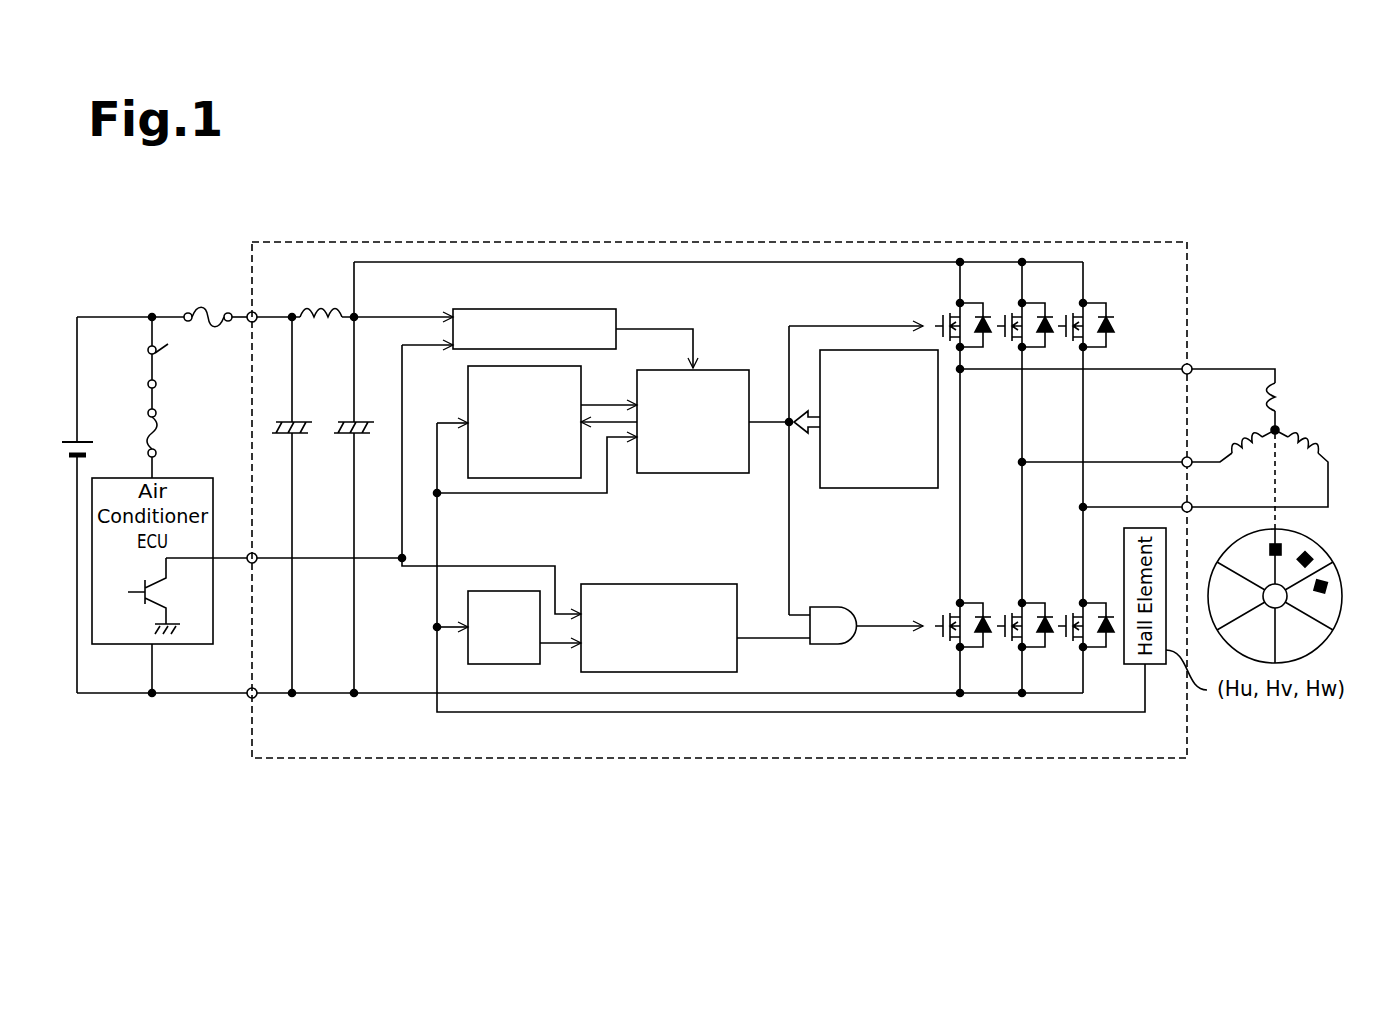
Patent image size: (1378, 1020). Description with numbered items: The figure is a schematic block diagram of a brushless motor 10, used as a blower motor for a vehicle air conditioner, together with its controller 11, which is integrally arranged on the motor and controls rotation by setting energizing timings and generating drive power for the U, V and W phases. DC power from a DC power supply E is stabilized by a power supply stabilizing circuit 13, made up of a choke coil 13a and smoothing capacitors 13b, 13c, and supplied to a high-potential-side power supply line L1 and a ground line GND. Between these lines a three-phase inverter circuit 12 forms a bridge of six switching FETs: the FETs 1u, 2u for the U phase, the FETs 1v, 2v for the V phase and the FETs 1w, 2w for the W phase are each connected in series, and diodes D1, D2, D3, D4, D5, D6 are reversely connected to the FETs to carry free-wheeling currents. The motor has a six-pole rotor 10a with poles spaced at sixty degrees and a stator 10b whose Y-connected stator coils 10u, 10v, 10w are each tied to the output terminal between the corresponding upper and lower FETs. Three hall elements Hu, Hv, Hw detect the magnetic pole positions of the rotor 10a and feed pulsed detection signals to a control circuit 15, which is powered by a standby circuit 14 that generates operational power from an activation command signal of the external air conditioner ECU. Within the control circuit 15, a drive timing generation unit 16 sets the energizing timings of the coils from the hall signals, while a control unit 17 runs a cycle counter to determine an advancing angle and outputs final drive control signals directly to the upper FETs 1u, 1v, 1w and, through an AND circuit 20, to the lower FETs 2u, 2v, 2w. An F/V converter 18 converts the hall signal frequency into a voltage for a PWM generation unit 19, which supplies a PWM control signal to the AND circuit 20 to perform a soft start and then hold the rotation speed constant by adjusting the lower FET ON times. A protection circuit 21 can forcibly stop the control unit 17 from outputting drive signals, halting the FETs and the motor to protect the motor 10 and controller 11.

The brushless motor 10 is at (1262, 213).
The rotor 10a is at (1206, 572).
The stator 10b is at (1302, 418).
The U-phase coil 10u is at (1289, 394).
The V-phase coil 10v is at (1240, 438).
The W-phase coil 10w is at (1300, 457).
The controller 11 is at (1128, 240).
The three-phase inverter circuit 12 is at (1047, 259).
The power supply stabilizing circuit 13 is at (290, 302).
The choke coil 13a is at (326, 294).
The smoothing capacitor 13b is at (302, 420).
The smoothing capacitor 13c is at (362, 420).
The standby circuit 14 is at (523, 308).
The control circuit 15 is at (722, 362).
The drive timing generation unit 16 is at (468, 385).
The control unit 17 is at (637, 394).
The F/V converter 18 is at (478, 592).
The PWM generation unit 19 is at (685, 585).
The AND circuit 20 is at (820, 607).
The protection circuit 21 is at (880, 488).
The high-potential-side power supply line L1 is at (726, 262).
The DC power supply E is at (88, 442).
The ground line GND is at (768, 693).
The FET 1u is at (942, 319).
The FET 1v is at (1004, 319).
The FET 1w is at (1065, 319).
The FET 2u is at (942, 619).
The FET 2v is at (1004, 619).
The FET 2w is at (1065, 619).
The diode D1 is at (990, 337).
The diode D2 is at (990, 637).
The diode D3 is at (1052, 337).
The diode D4 is at (1052, 637).
The diode D5 is at (1113, 337).
The diode D6 is at (1113, 637).
The hall element Hu is at (1267, 548).
The hall element Hv is at (1306, 552).
The hall element Hw is at (1327, 581).